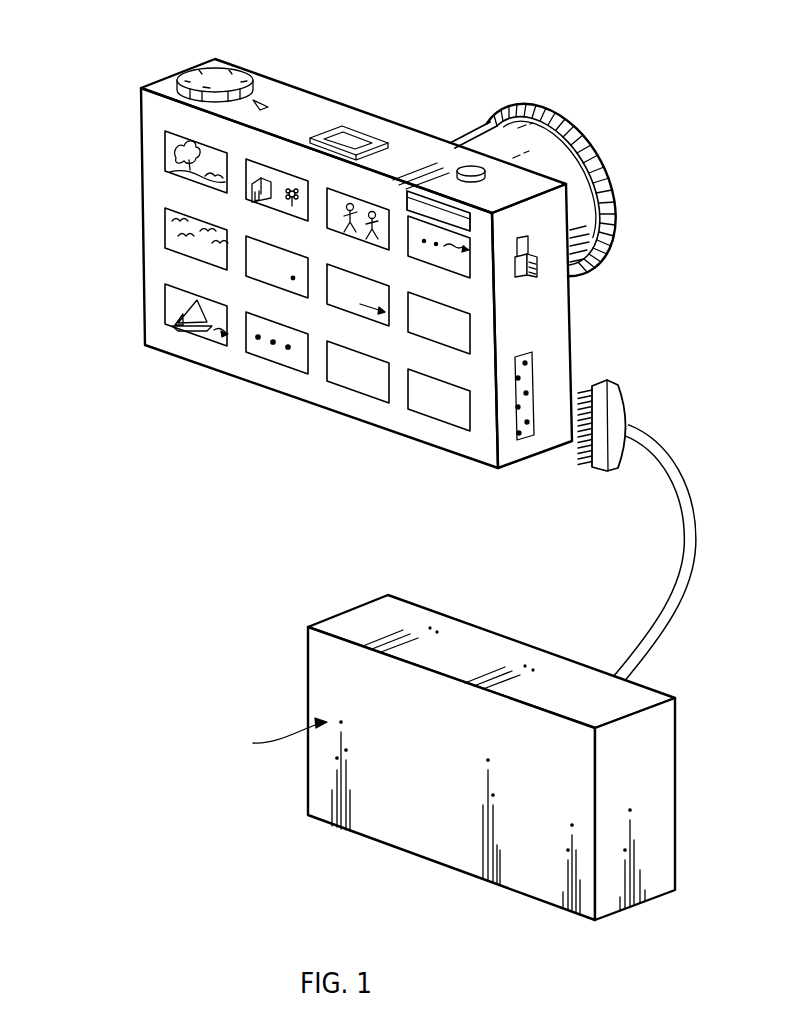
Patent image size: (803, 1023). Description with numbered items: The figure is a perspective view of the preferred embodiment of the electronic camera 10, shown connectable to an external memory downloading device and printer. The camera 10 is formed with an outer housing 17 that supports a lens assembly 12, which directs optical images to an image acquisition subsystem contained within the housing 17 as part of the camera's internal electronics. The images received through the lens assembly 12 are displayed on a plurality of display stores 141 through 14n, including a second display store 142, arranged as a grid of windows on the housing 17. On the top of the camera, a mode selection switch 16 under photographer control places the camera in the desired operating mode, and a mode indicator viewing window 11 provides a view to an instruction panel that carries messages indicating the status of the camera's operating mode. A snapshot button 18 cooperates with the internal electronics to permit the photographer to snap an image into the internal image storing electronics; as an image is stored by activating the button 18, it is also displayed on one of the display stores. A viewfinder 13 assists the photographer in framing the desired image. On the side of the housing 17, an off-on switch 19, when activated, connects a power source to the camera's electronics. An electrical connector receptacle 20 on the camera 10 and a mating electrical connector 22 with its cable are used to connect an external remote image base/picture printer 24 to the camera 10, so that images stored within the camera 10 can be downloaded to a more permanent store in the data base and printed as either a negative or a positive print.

The camera 10 is at (113, 87).
The mode indicator viewing window 11 is at (348, 127).
The lens assembly 12 is at (473, 128).
The viewfinder 13 is at (408, 198).
The display store 141 is at (172, 165).
The display store 142 is at (250, 200).
The display store 14n is at (423, 406).
The mode selection switch 16 is at (217, 60).
The outer housing 17 is at (153, 333).
The snapshot button 18 is at (486, 177).
The off-on switch 19 is at (515, 259).
The electrical connector receptacle 20 is at (533, 377).
The electrical connector 22 is at (620, 398).
The remote image base/picture printer 24 is at (340, 624).